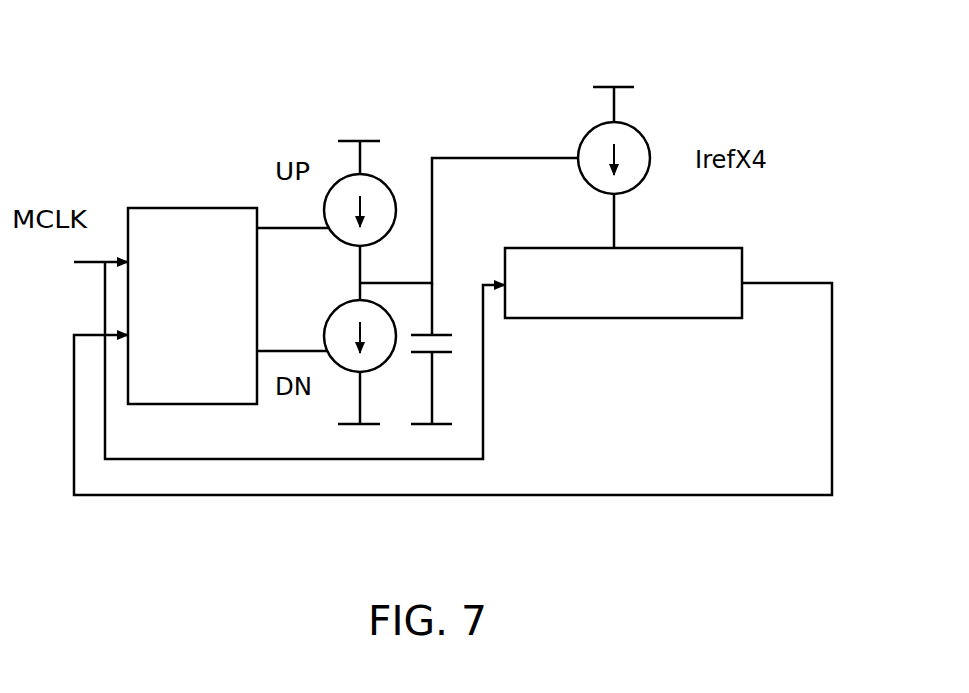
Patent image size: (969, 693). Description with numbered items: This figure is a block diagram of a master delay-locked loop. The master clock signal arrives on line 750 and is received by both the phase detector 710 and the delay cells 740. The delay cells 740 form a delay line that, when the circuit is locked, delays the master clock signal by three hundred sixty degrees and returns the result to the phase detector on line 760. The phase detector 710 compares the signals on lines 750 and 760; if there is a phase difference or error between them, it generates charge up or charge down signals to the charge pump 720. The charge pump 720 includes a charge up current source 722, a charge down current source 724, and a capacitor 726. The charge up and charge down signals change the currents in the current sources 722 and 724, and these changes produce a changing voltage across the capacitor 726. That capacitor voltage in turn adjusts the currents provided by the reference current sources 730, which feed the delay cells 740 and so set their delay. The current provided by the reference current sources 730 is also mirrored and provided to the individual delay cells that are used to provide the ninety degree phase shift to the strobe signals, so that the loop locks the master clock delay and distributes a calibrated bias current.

The phase detector 710 is at (188, 208).
The charge pump 720 is at (373, 75).
The charge up current source 722 is at (385, 180).
The charge down current source 724 is at (330, 313).
The capacitor 726 is at (433, 334).
The reference current sources 730 is at (637, 131).
The delay cells 740 is at (693, 248).
The line carrying master clock signal 750 is at (88, 264).
The line carrying delay cell output 760 is at (580, 496).